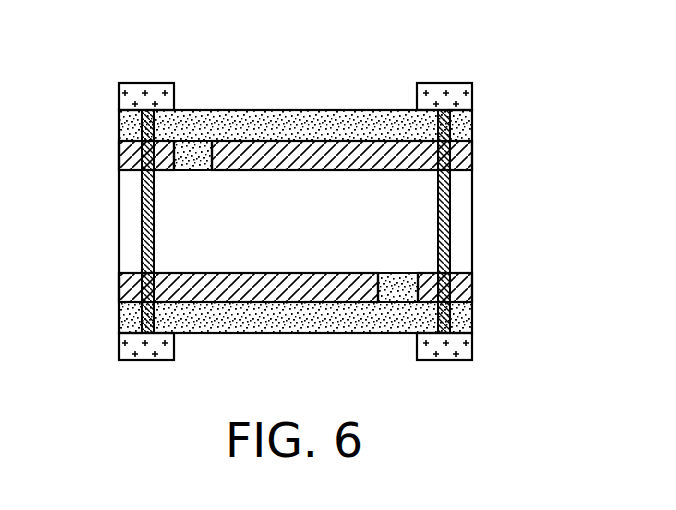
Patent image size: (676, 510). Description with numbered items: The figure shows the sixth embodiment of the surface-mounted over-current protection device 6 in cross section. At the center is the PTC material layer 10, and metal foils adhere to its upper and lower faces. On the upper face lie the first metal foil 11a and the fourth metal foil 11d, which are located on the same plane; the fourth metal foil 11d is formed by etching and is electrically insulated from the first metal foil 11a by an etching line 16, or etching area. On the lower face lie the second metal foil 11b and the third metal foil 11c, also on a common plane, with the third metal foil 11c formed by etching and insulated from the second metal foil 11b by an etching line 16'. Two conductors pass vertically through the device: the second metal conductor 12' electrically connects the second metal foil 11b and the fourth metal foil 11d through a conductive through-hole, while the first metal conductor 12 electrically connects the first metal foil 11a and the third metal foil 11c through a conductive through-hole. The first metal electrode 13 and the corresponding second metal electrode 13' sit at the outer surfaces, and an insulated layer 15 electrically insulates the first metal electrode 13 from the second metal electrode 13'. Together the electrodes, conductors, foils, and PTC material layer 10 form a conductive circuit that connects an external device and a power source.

The surface-mounted over-current protection device 6 is at (478, 48).
The PTC material layer 10 is at (462, 249).
The first metal foil 11a is at (331, 150).
The second metal foil 11b is at (237, 300).
The third metal foil 11c is at (472, 288).
The fourth metal foil 11d is at (126, 152).
The first metal conductor 12 is at (484, 221).
The second metal conductor 12' is at (106, 221).
The first metal electrode 13 is at (473, 223).
The second metal electrode 13' is at (116, 220).
The insulated layer 15 is at (271, 120).
The etching line 16 is at (193, 99).
The etching line 16' is at (398, 343).